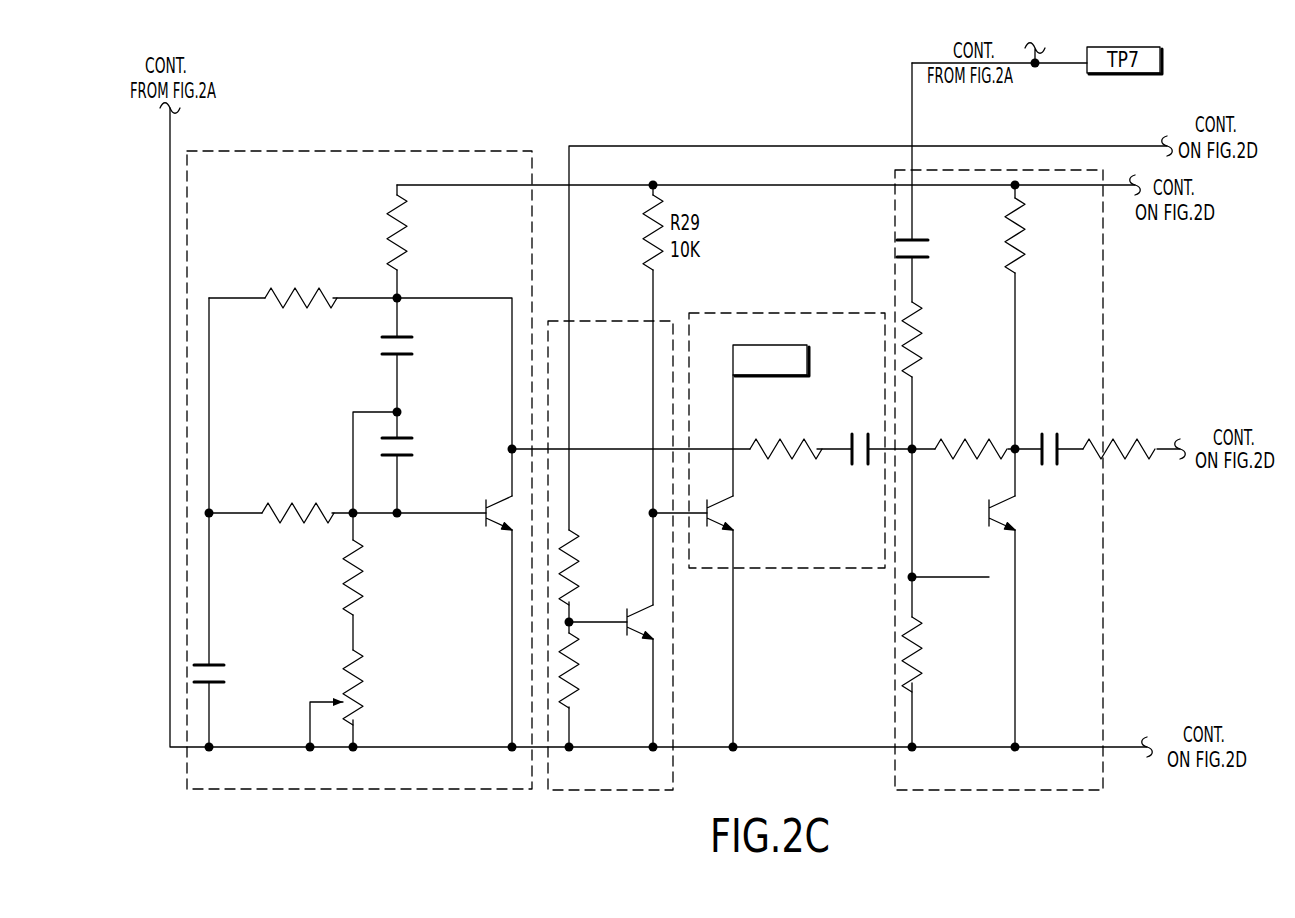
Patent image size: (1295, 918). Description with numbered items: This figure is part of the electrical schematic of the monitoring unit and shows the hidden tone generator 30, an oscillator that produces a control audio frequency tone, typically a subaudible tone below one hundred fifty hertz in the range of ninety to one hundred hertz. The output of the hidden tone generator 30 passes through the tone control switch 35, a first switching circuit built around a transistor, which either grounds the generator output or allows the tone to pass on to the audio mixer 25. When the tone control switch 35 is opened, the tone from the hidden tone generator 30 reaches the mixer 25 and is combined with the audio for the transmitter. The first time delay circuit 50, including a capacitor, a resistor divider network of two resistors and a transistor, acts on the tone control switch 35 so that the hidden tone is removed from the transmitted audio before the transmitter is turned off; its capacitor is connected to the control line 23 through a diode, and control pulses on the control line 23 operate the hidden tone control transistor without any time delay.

The control line 23 is at (1035, 147).
The audio mixer 25 is at (988, 777).
The hidden tone generator 30 is at (217, 780).
The tone control switch 35 is at (808, 557).
The first time delay circuit 50 is at (612, 748).